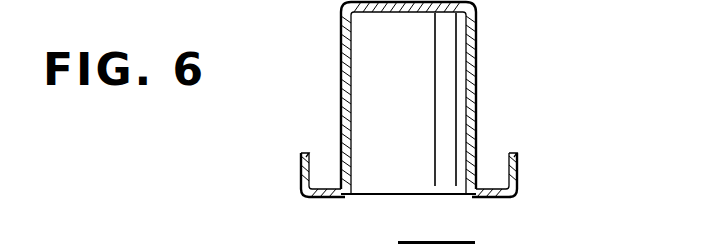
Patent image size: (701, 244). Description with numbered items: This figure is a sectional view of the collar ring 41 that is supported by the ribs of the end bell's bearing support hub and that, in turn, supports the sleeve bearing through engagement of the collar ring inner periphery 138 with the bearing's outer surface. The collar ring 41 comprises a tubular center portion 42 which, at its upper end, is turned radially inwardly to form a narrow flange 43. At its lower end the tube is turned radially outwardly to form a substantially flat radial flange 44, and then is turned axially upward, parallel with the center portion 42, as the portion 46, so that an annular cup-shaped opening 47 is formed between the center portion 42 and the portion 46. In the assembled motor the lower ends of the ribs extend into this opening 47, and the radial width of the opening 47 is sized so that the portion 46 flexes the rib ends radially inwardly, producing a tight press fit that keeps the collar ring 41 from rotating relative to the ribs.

The collar ring 41 is at (483, 90).
The tubular center portion 42 is at (341, 37).
The narrow flange 43 is at (503, 0).
The flat radial flange 44 is at (336, 197).
The axially upward portion 46 is at (520, 168).
The annular cup-shaped opening 47 is at (333, 151).
The collar ring inner periphery 138 is at (468, 125).